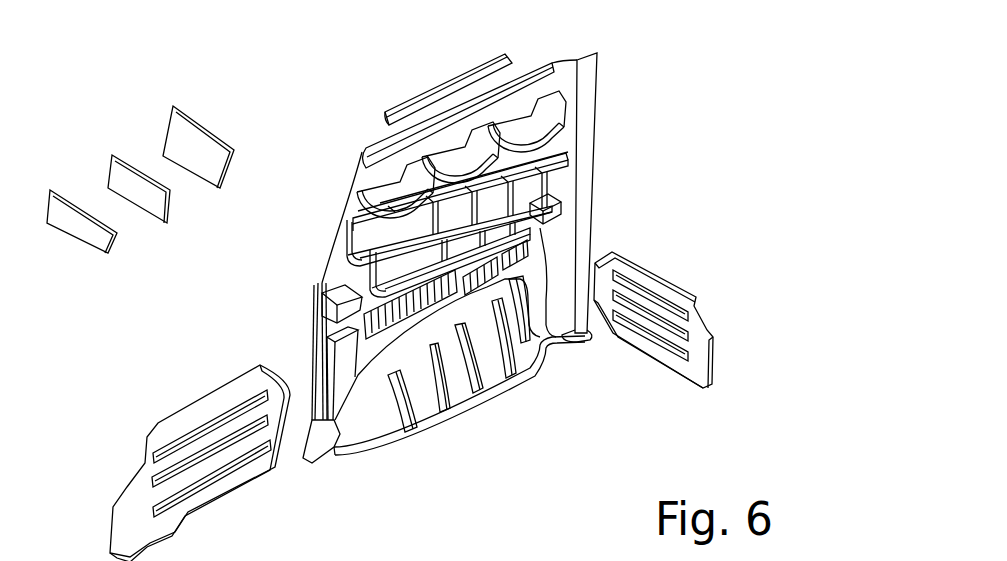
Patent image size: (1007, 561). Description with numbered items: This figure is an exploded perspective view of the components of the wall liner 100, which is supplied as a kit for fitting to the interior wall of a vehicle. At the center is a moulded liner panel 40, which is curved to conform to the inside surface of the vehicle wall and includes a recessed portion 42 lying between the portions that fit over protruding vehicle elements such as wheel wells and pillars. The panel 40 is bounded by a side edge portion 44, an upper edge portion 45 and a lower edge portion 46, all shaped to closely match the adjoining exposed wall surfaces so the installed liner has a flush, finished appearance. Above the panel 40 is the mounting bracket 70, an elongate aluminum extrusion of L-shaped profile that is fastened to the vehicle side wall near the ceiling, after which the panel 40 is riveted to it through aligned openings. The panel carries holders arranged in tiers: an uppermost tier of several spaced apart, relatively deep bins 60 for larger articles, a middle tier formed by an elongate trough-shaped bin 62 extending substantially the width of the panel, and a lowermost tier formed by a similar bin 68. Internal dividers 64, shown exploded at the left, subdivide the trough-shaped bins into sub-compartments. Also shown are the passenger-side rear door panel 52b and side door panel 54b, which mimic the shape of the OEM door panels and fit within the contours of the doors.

The wall liner 100 is at (246, 299).
The moulded liner panel 40 is at (606, 74).
The recessed portion 42 is at (320, 300).
The side edge portion 44 is at (572, 107).
The upper edge portion 45 is at (376, 150).
The lower edge portion 46 is at (433, 427).
The rear door panel 52b is at (648, 288).
The side door panel 54b is at (274, 484).
The bin 60 is at (354, 194).
The trough-shaped bin 62 is at (342, 253).
The internal divider 64 is at (73, 205).
The bin 68 is at (561, 214).
The mounting bracket 70 is at (437, 82).